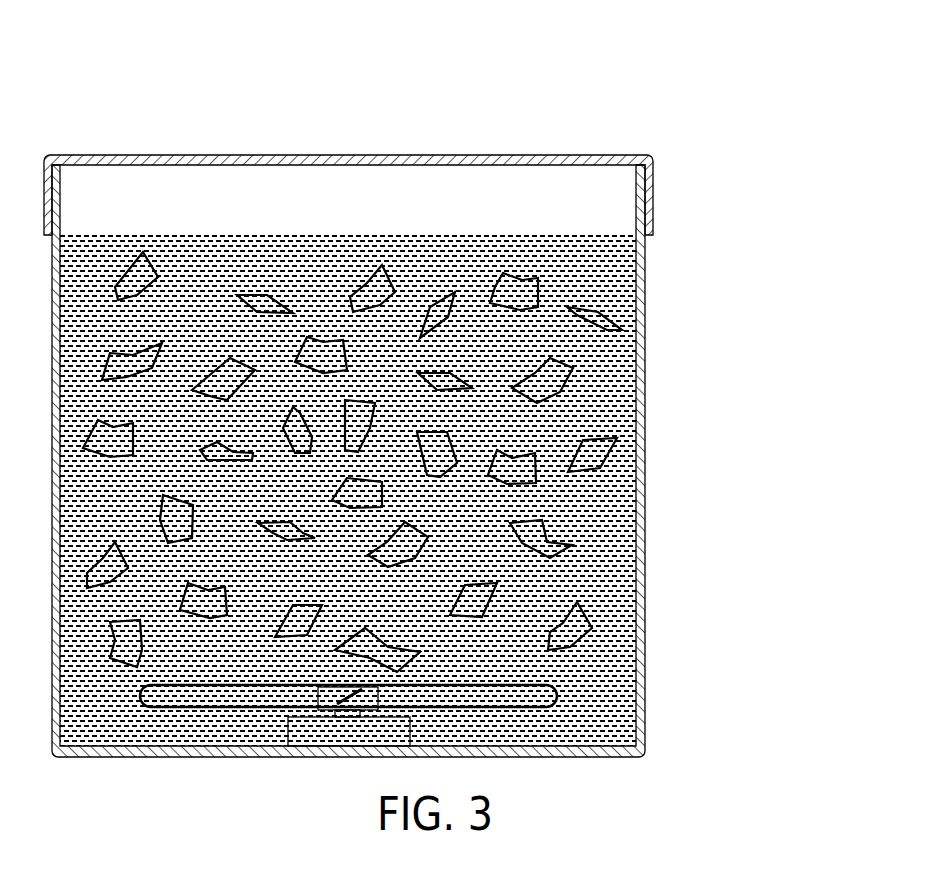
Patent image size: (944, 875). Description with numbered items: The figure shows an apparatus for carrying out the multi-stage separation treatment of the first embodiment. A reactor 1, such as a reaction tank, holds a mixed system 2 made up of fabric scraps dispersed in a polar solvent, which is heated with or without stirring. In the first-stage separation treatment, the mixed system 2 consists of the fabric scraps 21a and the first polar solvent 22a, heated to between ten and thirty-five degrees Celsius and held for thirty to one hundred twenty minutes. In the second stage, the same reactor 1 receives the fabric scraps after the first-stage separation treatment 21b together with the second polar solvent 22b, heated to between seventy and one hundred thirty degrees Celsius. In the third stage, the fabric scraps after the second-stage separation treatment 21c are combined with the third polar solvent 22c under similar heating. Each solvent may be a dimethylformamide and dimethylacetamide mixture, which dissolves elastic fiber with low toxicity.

The reactor 1 is at (546, 102).
The mixed system 2 is at (822, 300).
The fabric scraps 21a is at (622, 324).
The fabric scraps after the first-stage separation treatment 21b is at (404, 382).
The fabric scraps after the second-stage separation treatment 21c is at (328, 371).
The first polar solvent 22a is at (632, 576).
The second polar solvent 22b is at (377, 575).
The third polar solvent 22c is at (329, 593).